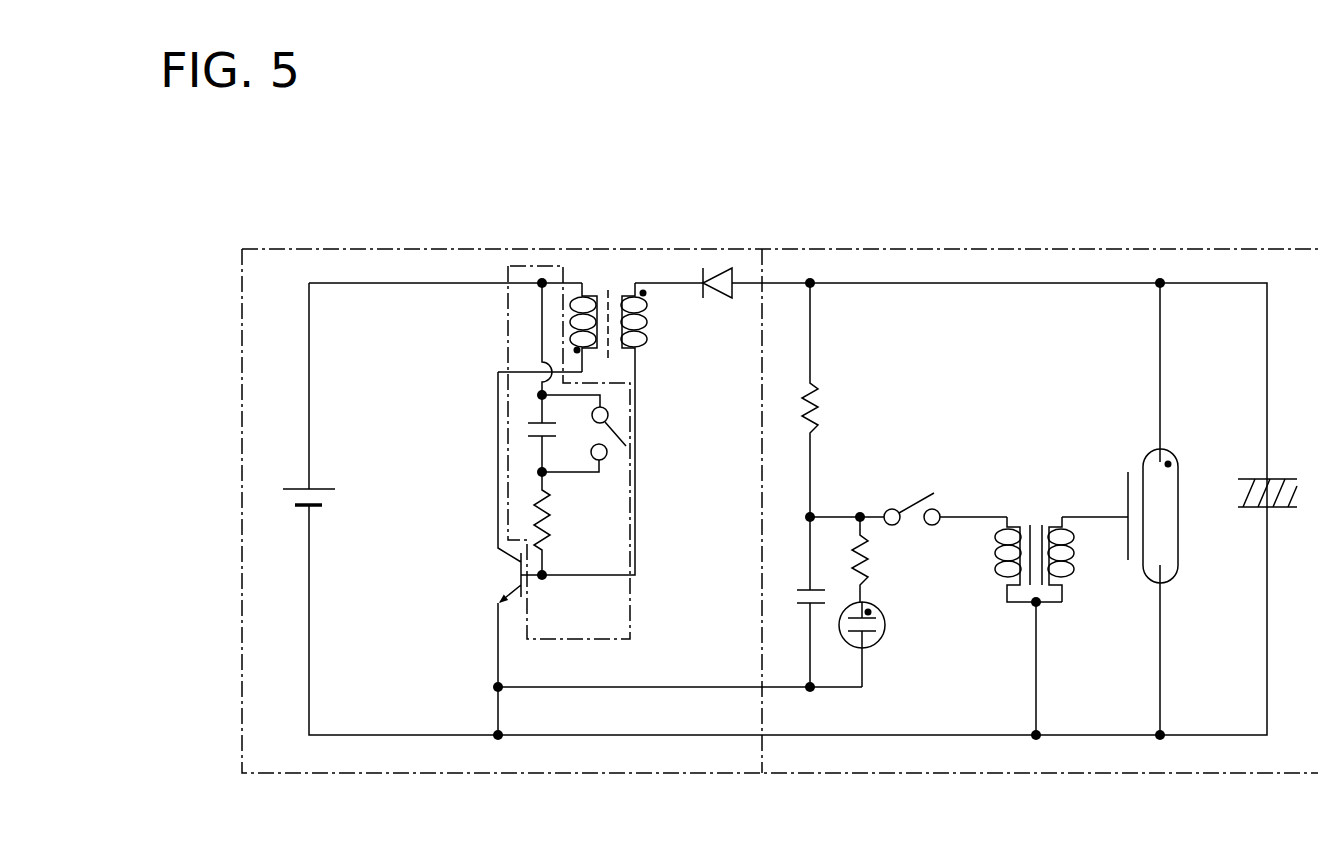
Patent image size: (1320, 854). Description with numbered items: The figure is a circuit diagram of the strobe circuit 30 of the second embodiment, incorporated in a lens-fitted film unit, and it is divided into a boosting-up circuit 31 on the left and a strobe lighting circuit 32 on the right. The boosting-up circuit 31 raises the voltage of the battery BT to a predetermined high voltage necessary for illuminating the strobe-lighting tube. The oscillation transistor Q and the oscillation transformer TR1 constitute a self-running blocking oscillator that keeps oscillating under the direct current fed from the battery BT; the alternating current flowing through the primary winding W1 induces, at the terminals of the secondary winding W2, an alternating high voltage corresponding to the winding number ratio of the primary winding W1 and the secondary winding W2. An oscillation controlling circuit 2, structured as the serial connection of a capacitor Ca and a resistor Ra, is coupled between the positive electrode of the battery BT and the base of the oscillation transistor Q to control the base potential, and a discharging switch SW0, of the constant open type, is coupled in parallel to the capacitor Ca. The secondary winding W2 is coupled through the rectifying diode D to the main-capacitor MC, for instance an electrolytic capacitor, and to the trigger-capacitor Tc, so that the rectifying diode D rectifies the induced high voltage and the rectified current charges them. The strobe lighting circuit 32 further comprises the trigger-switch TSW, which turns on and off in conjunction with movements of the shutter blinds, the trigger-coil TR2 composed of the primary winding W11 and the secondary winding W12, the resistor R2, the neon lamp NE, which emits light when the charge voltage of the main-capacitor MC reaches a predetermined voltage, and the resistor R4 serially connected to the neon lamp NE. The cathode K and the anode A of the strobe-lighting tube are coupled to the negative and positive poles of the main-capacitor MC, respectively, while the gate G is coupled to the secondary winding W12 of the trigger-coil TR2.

The strobe circuit 30 is at (706, 176).
The boosting-up circuit 31 is at (385, 249).
The strobe lighting circuit 32 is at (1062, 248).
The oscillation controlling circuit 2 is at (630, 604).
The battery BT is at (291, 493).
The oscillation transformer TR1 is at (617, 374).
The primary winding W1 is at (582, 295).
The secondary winding W2 is at (617, 429).
The rectifying diode D is at (717, 300).
The capacitor Ca is at (528, 431).
The discharging switch SW0 is at (628, 440).
The resistor Ra is at (561, 523).
The oscillation transistor Q is at (496, 487).
The resistor R2 is at (829, 400).
The trigger-switch TSW is at (908, 494).
The resistor R4 is at (879, 559).
The trigger-capacitor Tc is at (801, 602).
The neon lamp NE is at (874, 644).
The trigger-coil TR2 is at (1040, 587).
The primary winding W11 is at (1005, 559).
The secondary winding W12 is at (1090, 559).
The gate G is at (1113, 516).
The cathode K is at (1175, 375).
The anode A is at (1176, 650).
The main-capacitor MC is at (1267, 488).